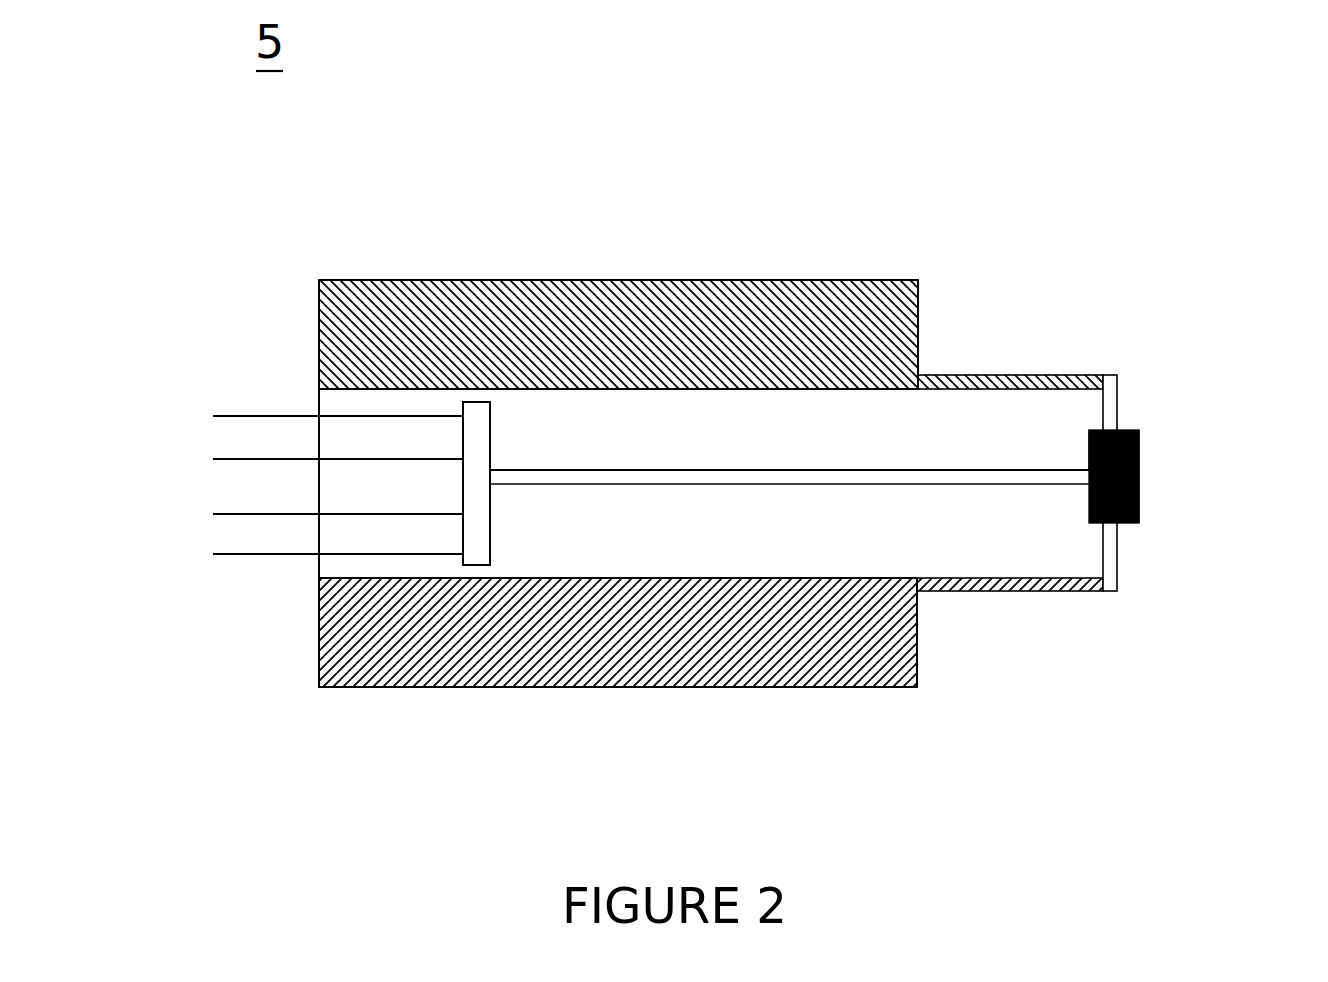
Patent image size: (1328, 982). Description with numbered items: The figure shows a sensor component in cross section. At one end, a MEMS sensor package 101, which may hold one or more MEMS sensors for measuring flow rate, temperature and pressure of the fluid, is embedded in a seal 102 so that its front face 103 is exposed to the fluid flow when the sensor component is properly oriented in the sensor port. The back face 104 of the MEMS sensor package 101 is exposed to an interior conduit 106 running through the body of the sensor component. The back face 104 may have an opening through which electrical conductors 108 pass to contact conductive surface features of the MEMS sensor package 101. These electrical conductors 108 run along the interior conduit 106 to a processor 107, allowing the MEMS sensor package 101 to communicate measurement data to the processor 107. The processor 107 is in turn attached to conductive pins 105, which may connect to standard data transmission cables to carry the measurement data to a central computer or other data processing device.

The MEMS sensor package 101 is at (1139, 503).
The seal 102 is at (1103, 535).
The front face 103 is at (1143, 457).
The back face 104 is at (1090, 443).
The conductive pins 105 is at (252, 416).
The interior conduit 106 is at (917, 537).
The processor 107 is at (477, 552).
The electrical conductors 108 is at (683, 483).